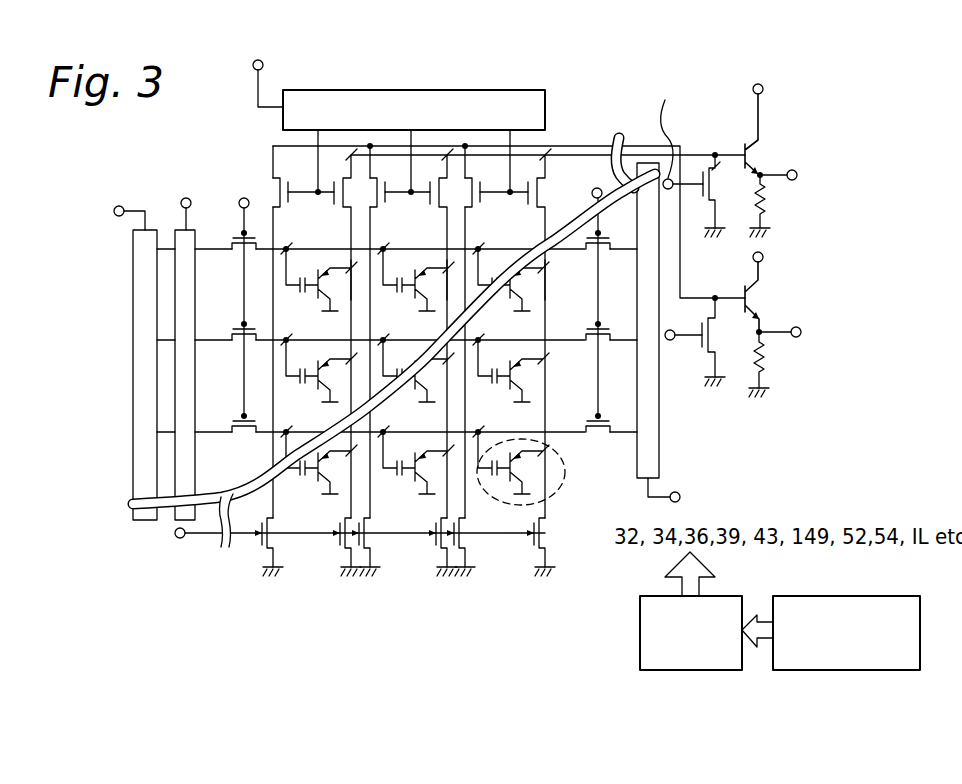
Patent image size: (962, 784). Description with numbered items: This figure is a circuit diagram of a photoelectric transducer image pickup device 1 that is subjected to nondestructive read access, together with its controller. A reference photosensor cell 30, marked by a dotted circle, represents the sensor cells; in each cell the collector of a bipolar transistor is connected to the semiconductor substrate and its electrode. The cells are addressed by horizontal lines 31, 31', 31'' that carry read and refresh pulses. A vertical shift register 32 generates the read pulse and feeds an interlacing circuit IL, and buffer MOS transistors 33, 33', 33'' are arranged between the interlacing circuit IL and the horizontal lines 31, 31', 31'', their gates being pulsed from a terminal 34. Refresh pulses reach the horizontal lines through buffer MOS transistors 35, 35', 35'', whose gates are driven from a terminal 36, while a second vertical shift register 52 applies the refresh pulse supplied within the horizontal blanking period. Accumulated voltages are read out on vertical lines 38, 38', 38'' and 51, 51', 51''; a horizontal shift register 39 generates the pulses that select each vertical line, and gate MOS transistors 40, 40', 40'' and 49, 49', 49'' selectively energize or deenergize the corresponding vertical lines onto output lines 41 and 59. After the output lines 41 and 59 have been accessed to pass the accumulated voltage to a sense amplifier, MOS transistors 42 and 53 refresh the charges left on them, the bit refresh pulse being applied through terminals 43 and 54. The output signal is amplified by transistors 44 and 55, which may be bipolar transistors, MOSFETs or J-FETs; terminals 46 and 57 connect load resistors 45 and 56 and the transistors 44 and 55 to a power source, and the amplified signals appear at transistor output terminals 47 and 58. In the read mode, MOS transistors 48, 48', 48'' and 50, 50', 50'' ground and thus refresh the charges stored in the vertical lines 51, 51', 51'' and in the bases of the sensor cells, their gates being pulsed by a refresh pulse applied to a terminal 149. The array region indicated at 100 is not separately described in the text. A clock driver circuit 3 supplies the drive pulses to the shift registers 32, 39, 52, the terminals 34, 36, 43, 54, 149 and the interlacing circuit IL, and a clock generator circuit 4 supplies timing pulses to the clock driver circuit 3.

The image pickup device 1 is at (409, 80).
The clock driver circuit 3 is at (695, 671).
The clock generator circuit 4 is at (850, 671).
The reference photosensor cell 30 is at (560, 470).
The horizontal line 31 is at (297, 188).
The horizontal line 31' is at (345, 234).
The horizontal line 31'' is at (396, 280).
The vertical shift register 32 is at (132, 390).
The buffer MOS transistor 33 is at (390, 225).
The buffer MOS transistor 33' is at (390, 319).
The buffer MOS transistor 33'' is at (390, 409).
The terminal 34 is at (244, 198).
The buffer MOS transistor 35 is at (611, 230).
The buffer MOS transistor 35' is at (598, 313).
The buffer MOS transistor 35'' is at (599, 405).
The terminal 36 is at (598, 188).
The vertical line 38 is at (375, 255).
The vertical line 38' is at (479, 255).
The vertical line 38'' is at (571, 242).
The horizontal shift register 39 is at (512, 90).
The gate MOS transistor 40 is at (334, 333).
The gate MOS transistor 40' is at (430, 333).
The gate MOS transistor 40'' is at (553, 333).
The output line 41 is at (618, 150).
The MOS transistor 42 is at (719, 188).
The terminal 43 is at (672, 190).
The transistor 44 is at (742, 152).
The load resistor 45 is at (768, 206).
The terminal 46 is at (764, 90).
The transistor output terminal 47 is at (798, 176).
The MOS transistor 48 is at (329, 540).
The MOS transistor 48' is at (426, 539).
The MOS transistor 48'' is at (519, 541).
The gate MOS transistor 49 is at (253, 319).
The gate MOS transistor 49' is at (392, 332).
The gate MOS transistor 49'' is at (489, 332).
The MOS transistor 50 is at (253, 551).
The MOS transistor 50' is at (389, 554).
The MOS transistor 50'' is at (486, 550).
The vertical line 51 is at (286, 277).
The vertical line 51' is at (412, 351).
The vertical line 51'' is at (507, 351).
The vertical shift register 52 is at (660, 462).
The MOS transistor 53 is at (701, 358).
The terminal 54 is at (670, 342).
The transistor 55 is at (752, 296).
The load resistor 56 is at (766, 366).
The terminal 57 is at (764, 258).
The transistor output terminal 58 is at (801, 334).
The output line 59 is at (577, 147).
The image sensing section 100 is at (318, 590).
The terminal 149 is at (174, 536).
The interlacing circuit IL is at (197, 229).